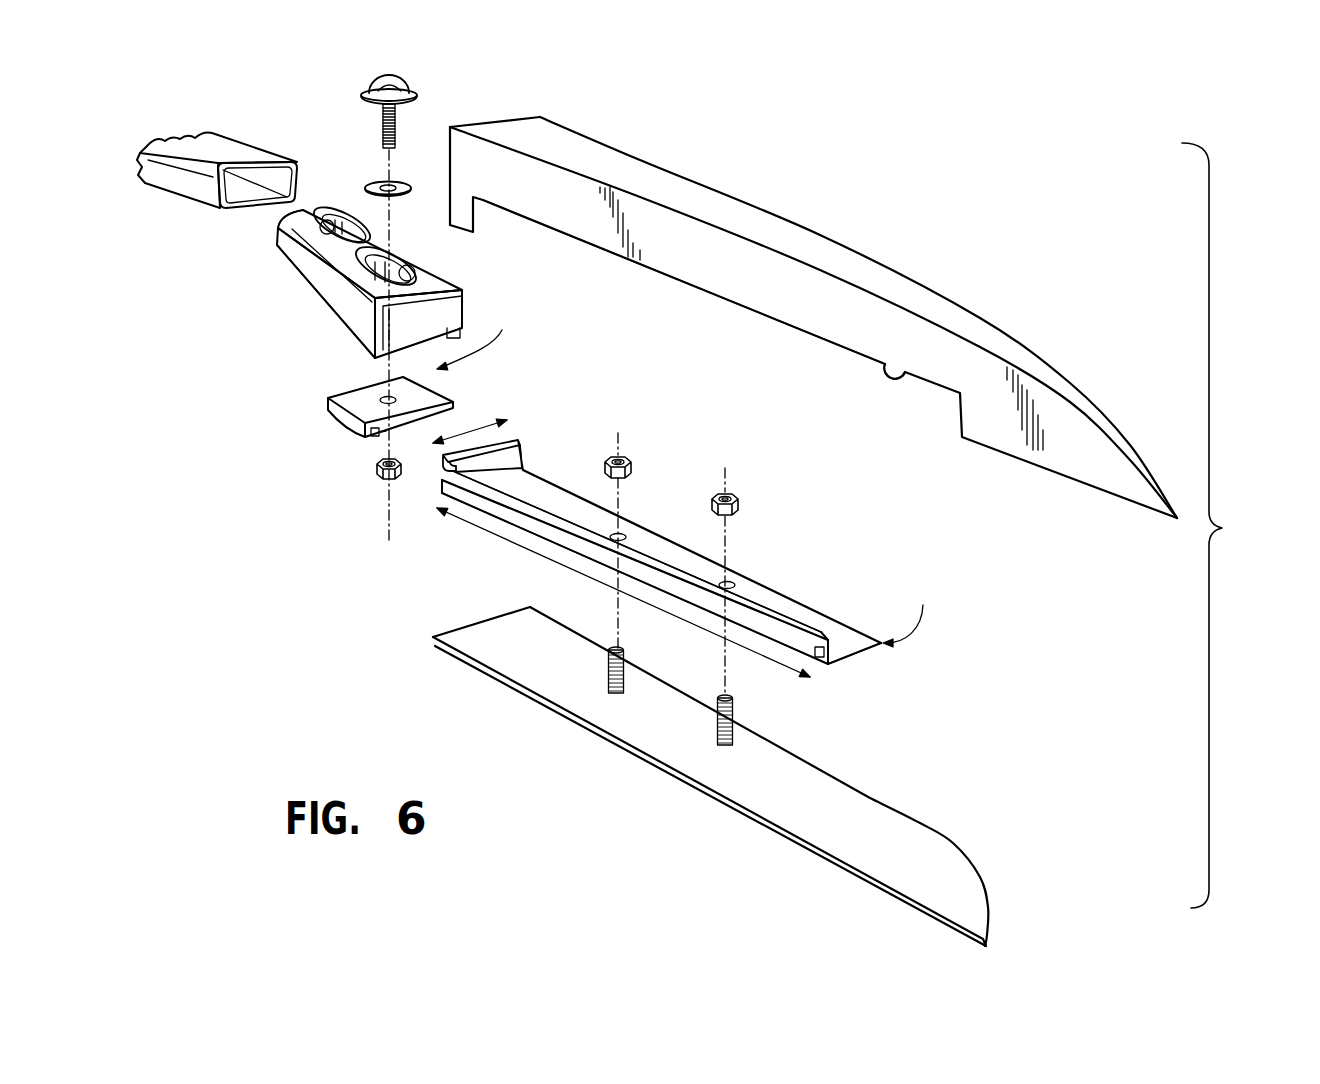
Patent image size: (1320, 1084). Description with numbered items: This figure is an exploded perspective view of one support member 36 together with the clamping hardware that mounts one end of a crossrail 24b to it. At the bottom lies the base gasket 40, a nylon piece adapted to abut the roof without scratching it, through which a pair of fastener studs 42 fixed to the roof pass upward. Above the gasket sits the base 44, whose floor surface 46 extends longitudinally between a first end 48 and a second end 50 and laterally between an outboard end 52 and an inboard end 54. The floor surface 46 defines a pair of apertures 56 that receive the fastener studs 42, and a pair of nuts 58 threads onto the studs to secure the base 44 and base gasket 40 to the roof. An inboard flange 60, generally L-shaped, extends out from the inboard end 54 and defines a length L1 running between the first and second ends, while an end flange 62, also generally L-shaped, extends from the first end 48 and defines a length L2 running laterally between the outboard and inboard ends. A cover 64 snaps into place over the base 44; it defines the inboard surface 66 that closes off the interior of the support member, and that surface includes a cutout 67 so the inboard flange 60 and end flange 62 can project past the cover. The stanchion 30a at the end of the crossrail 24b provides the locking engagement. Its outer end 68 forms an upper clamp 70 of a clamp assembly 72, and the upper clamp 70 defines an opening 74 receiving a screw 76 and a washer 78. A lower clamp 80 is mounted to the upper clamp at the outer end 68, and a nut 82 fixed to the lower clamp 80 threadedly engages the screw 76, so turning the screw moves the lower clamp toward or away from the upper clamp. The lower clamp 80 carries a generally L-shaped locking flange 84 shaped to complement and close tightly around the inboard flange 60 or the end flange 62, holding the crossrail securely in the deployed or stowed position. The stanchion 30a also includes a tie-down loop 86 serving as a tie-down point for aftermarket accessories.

The crossrail 24b is at (226, 131).
The stanchion 30a is at (302, 283).
The support member 36 is at (1224, 525).
The base gasket 40 is at (830, 838).
The fastener studs 42 is at (603, 680).
The base 44 is at (910, 615).
The floor surface 46 is at (757, 593).
The first end 48 is at (520, 467).
The second end 50 is at (863, 657).
The outboard end 52 is at (818, 612).
The inboard end 54 is at (820, 670).
The apertures 56 is at (623, 533).
The nuts 58 is at (633, 463).
The inboard flange 60 is at (665, 573).
The end flange 62 is at (510, 440).
The cover 64 is at (700, 181).
The inboard surface 66 is at (723, 278).
The cutout 67 is at (897, 366).
The outer end 68 is at (375, 355).
The upper clamp 70 is at (457, 313).
The clamp assembly 72 is at (484, 345).
The opening 74 is at (410, 267).
The screw 76 is at (418, 95).
The washer 78 is at (377, 183).
The lower clamp 80 is at (330, 418).
The nut 82 is at (377, 473).
The locking flange 84 is at (372, 433).
The tie-down loop 86 is at (283, 227).
The length of inboard flange L1 is at (522, 552).
The length of end flange L2 is at (477, 430).